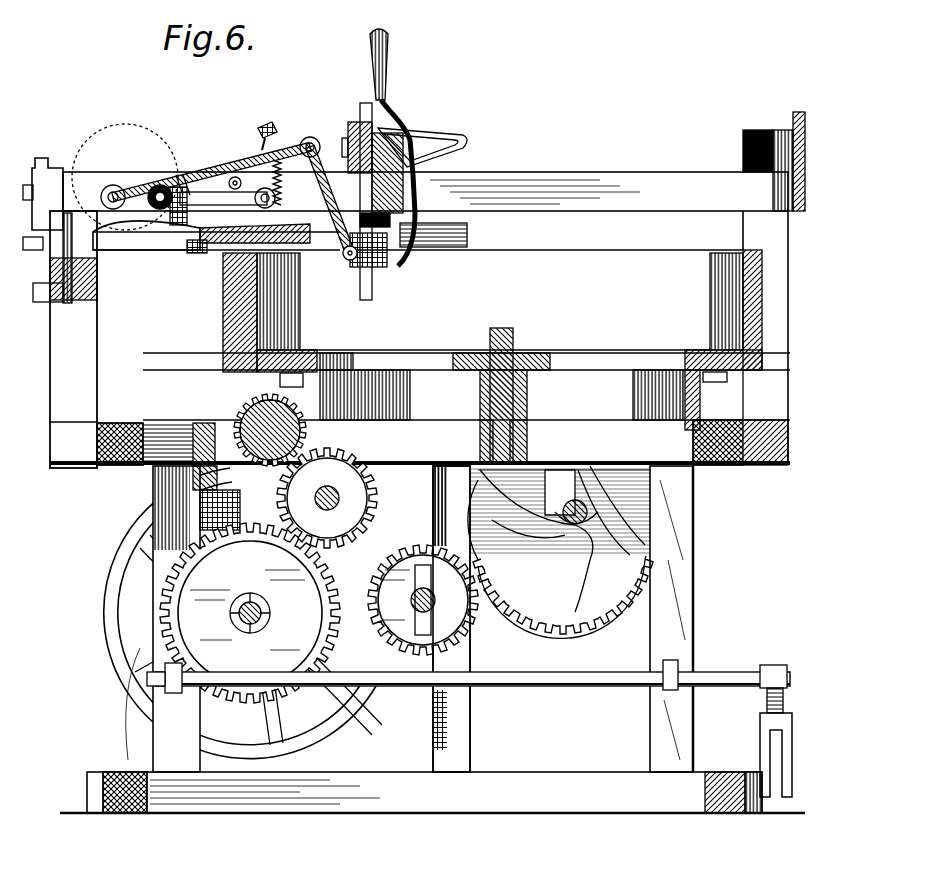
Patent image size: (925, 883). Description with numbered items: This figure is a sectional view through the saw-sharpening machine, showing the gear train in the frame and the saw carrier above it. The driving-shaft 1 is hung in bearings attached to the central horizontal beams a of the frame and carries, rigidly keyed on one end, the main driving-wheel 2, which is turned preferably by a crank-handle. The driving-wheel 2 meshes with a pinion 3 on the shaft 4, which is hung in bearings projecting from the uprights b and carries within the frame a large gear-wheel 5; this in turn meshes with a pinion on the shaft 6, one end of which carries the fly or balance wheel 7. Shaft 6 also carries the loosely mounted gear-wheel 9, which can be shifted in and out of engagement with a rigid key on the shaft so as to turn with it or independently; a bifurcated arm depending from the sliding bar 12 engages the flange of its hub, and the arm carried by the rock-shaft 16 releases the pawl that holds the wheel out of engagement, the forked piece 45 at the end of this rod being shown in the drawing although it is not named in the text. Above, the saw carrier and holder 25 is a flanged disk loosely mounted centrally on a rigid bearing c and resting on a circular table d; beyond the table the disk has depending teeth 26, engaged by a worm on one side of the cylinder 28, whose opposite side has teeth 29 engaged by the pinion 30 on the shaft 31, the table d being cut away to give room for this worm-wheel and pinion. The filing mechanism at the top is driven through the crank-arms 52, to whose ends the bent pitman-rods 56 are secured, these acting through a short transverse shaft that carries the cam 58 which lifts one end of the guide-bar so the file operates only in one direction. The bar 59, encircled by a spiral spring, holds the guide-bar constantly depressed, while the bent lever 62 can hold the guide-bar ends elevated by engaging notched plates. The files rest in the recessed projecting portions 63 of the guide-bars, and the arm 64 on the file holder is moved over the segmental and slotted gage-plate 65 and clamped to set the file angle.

The driving-shaft 1 is at (580, 508).
The main driving-wheel 2 is at (512, 598).
The pinion 3 is at (423, 600).
The shaft 4 is at (429, 596).
The large gear-wheel 5 is at (216, 235).
The shaft 6 is at (258, 606).
The fly or balance wheel 7 is at (243, 614).
The gear-wheel 9 is at (250, 613).
The sliding bar 12 is at (193, 482).
The rock-shaft 16 is at (533, 682).
The saw carrier and holder 25 is at (434, 287).
The depending teeth 26 is at (280, 382).
The cylinder 28 is at (270, 430).
The teeth 29 is at (236, 412).
The pinion 30 is at (327, 498).
The shaft 31 is at (322, 504).
The fork 45 is at (767, 714).
The crank-arms 52 is at (118, 190).
The bent pitman-rods 56 is at (236, 168).
The cam 58 is at (222, 204).
The bar 59 is at (276, 130).
The bent levers 62 is at (388, 108).
The recessed projecting portions 63 is at (198, 254).
The arm 64 is at (180, 178).
The segmental and slotted gage-plate 65 is at (163, 184).
The central horizontal beams a is at (420, 442).
The uprights b is at (451, 619).
The rigid bearing c is at (530, 402).
The circular table d is at (435, 395).